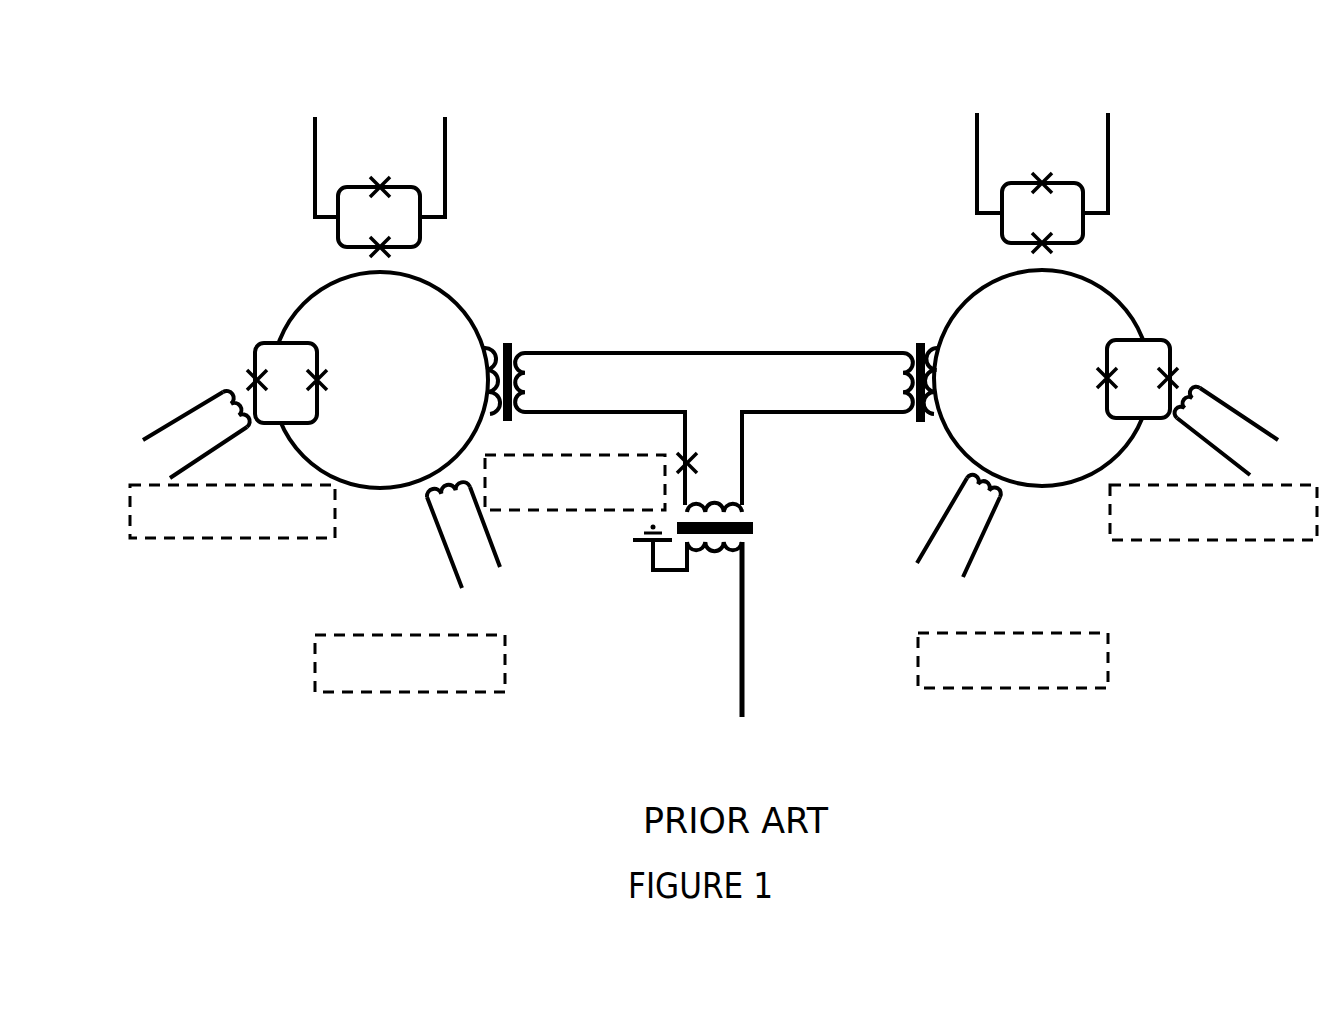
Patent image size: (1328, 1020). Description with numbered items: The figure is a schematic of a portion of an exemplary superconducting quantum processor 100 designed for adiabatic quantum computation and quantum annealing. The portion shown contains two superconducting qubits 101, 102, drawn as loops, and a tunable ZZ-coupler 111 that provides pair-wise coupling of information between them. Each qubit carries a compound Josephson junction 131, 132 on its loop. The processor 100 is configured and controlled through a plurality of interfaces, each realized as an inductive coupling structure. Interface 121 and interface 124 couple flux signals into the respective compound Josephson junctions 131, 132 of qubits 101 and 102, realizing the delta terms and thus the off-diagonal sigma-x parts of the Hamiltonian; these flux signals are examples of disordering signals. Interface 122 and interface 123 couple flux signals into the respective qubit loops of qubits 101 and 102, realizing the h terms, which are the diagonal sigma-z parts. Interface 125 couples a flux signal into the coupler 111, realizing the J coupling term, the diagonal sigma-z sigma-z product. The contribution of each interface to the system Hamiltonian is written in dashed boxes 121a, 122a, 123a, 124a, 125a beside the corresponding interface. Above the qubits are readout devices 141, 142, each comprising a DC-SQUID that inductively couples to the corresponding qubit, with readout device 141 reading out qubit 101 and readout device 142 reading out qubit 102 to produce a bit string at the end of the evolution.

The superconducting quantum processor 100 is at (247, 146).
The superconducting qubit 101 is at (327, 318).
The superconducting qubit 102 is at (1112, 316).
The tunable ZZ-coupler 111 is at (718, 370).
The interface 121 is at (222, 390).
The box 121a is at (255, 540).
The interface 122 is at (440, 498).
The box 122a is at (430, 695).
The interface 123 is at (995, 505).
The box 123a is at (980, 690).
The interface 124 is at (1203, 378).
The box 124a is at (1175, 541).
The interface 125 is at (715, 556).
The box 125a is at (610, 512).
The compound Josephson junction 131 is at (323, 378).
The compound Josephson junction 132 is at (1100, 380).
The readout device 141 is at (383, 178).
The readout device 142 is at (1040, 165).